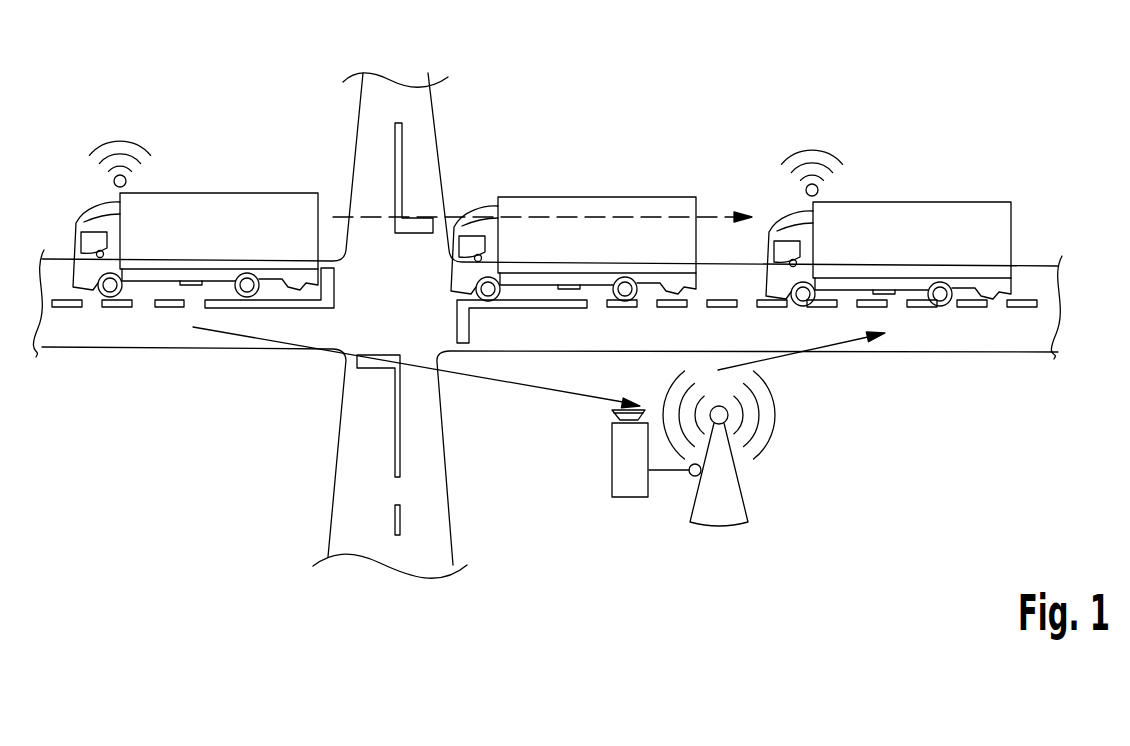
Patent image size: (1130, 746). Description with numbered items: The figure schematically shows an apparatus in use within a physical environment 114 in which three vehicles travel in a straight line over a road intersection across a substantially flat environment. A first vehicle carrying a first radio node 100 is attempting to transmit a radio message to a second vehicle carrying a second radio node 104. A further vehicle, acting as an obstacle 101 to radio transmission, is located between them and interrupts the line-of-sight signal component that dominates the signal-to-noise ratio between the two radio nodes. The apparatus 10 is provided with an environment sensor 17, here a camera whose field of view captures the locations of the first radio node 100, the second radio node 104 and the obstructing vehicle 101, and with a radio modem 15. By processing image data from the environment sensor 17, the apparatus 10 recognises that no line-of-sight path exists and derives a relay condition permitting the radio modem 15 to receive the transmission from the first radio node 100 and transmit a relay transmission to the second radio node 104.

The environment 114 is at (601, 82).
The first radio node 100 is at (216, 193).
The obstacle 101 is at (598, 197).
The second radio node 104 is at (911, 202).
The environment sensor 17 is at (611, 461).
The apparatus 10 is at (741, 489).
The radio modem 15 is at (777, 415).